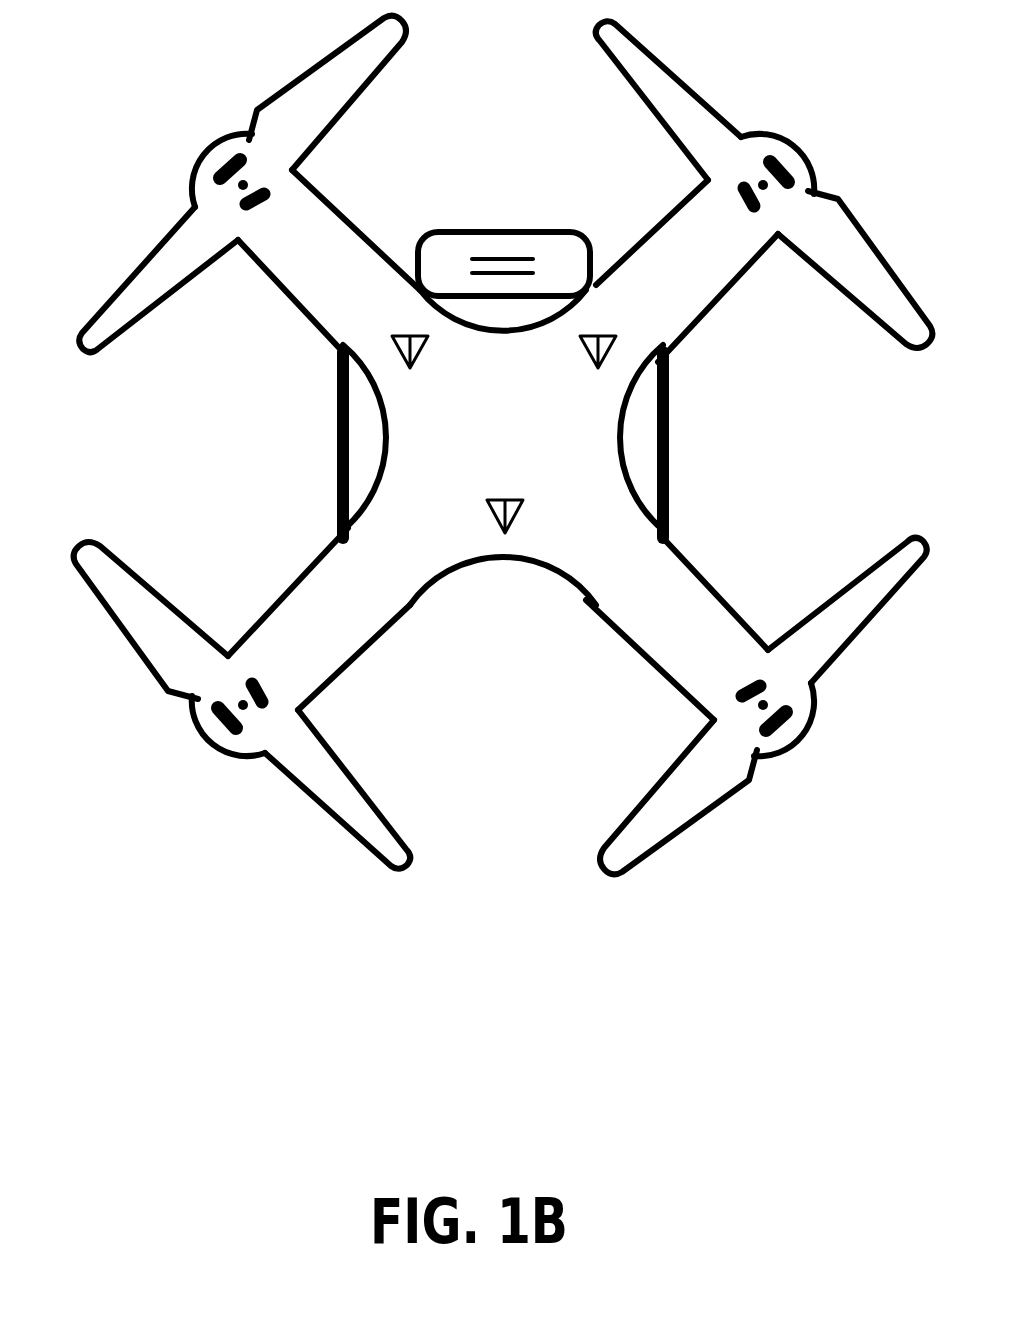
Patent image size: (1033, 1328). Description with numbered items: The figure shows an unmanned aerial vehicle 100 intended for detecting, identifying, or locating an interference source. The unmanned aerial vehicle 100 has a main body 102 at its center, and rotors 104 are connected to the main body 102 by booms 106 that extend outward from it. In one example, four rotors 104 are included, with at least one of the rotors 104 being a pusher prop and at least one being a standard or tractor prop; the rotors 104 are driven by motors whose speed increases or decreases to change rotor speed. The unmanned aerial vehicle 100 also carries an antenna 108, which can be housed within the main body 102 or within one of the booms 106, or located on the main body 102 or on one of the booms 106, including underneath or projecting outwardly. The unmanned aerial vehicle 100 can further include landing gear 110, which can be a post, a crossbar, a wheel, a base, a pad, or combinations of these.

The unmanned aerial vehicle 100 is at (111, 78).
The main body 102 is at (444, 444).
The rotors 104 is at (405, 863).
The booms 106 is at (670, 258).
The antenna 108 is at (393, 352).
The landing gear 110 is at (670, 439).